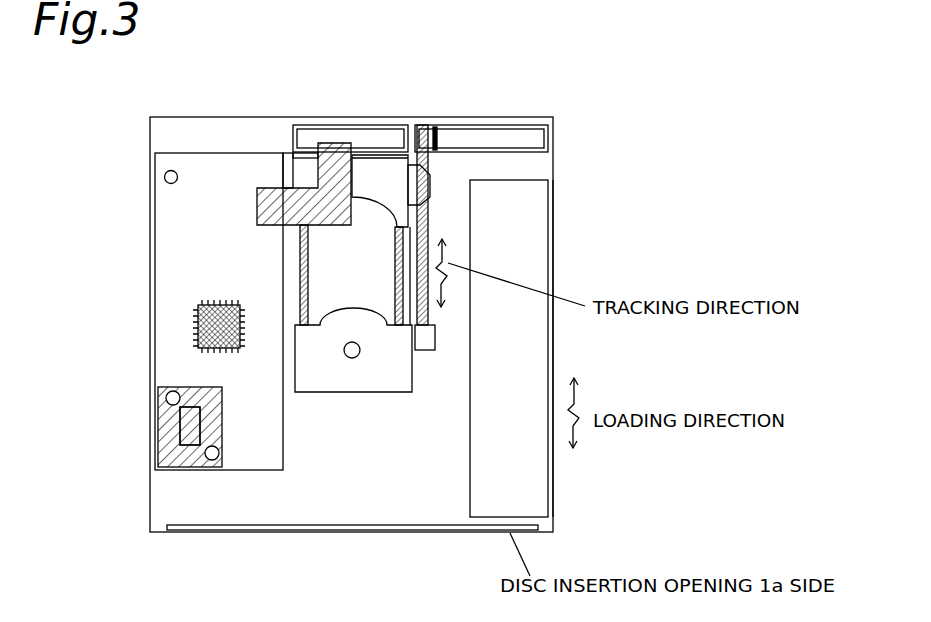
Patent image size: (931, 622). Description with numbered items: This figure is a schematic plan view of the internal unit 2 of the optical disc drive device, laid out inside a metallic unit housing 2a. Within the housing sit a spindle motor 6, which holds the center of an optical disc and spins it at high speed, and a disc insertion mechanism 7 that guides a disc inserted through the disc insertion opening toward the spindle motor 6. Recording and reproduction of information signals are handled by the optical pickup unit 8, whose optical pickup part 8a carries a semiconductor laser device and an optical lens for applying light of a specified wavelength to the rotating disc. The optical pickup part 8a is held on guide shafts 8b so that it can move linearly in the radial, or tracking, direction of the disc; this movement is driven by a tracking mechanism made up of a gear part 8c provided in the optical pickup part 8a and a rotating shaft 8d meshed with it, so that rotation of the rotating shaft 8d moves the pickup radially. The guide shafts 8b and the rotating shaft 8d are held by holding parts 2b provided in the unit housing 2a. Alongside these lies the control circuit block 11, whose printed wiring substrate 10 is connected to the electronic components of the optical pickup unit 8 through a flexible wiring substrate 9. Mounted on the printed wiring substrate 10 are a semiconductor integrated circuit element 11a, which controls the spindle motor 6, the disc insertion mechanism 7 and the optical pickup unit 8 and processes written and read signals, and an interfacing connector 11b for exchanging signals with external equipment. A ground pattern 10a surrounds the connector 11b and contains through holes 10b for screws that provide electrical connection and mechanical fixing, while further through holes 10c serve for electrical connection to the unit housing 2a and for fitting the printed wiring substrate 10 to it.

The internal unit 2 is at (552, 112).
The unit housing 2a is at (553, 248).
The holding parts 2b is at (398, 137).
The spindle motor 6 is at (337, 385).
The disc insertion mechanism 7 is at (530, 490).
The optical pickup unit 8 is at (362, 152).
The optical pickup part 8a is at (372, 190).
The guide shafts 8b is at (397, 295).
The gear part 8c is at (421, 183).
The rotating shaft 8d is at (428, 233).
The flexible wiring substrate 9 is at (277, 193).
The printed wiring substrate 10 is at (167, 217).
The ground pattern 10a is at (180, 424).
The through holes 10b is at (167, 397).
The through holes 10c is at (163, 172).
The control circuit block 11 is at (137, 479).
The semiconductor integrated circuit element 11a is at (196, 318).
The interfacing connector 11b is at (184, 432).